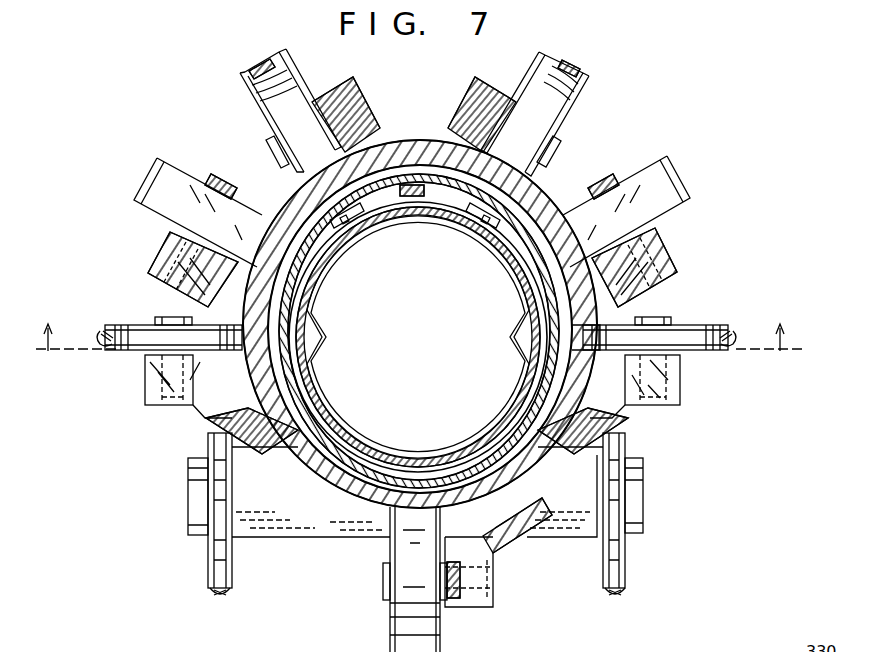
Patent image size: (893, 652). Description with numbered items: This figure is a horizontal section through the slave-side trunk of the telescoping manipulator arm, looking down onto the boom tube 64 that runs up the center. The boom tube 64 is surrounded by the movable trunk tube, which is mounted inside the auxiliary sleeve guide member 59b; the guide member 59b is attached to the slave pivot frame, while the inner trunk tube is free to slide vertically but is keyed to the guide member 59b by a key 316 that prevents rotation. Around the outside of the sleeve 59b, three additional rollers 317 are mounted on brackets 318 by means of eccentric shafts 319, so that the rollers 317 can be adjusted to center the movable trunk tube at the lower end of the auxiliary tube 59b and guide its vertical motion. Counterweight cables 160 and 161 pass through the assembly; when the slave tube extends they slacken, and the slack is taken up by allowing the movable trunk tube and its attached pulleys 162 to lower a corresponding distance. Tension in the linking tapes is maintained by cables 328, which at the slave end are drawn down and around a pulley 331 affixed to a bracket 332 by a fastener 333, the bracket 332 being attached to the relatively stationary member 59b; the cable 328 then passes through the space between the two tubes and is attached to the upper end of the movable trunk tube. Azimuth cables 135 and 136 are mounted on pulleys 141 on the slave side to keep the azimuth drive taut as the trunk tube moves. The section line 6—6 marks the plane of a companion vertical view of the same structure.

The counterweight cable 160 is at (258, 66).
The counterweight cable 161 is at (562, 56).
The pulleys 162 is at (243, 80).
The roller 317 is at (160, 172).
The bracket 318 is at (163, 257).
The eccentric shaft 319 is at (223, 168).
The cable 328 is at (105, 332).
The pulley 331 is at (692, 326).
The fastener 333 is at (652, 316).
The bracket 332 is at (152, 388).
The key 316 is at (610, 416).
The boom tube 64 is at (310, 397).
The auxiliary sleeve guide member 59b is at (232, 420).
The pulley 141 is at (208, 568).
The azimuth cable 135 is at (221, 594).
The azimuth cable 136 is at (616, 591).
The section line 6 is at (419, 328).